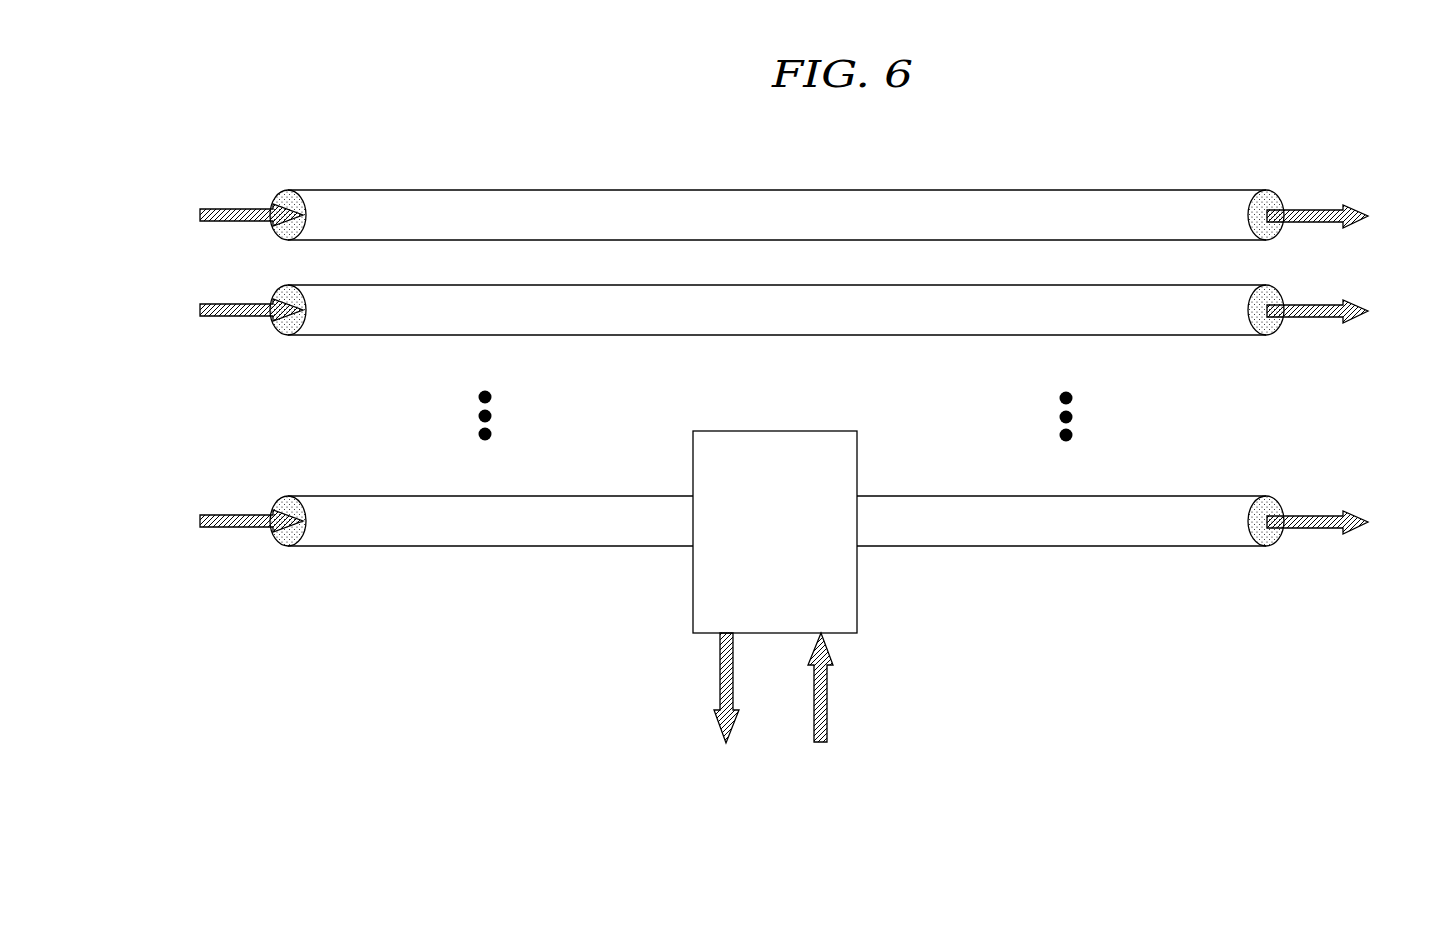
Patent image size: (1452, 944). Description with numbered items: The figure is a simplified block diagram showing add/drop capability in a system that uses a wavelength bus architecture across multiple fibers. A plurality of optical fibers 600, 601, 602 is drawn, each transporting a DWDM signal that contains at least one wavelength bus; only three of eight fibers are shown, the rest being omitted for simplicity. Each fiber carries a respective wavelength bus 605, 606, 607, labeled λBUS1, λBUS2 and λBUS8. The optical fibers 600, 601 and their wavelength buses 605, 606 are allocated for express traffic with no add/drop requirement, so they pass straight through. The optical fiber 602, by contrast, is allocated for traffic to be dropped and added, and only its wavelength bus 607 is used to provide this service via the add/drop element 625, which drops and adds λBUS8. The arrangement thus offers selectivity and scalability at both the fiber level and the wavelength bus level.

The optical fiber 600 is at (595, 192).
The optical fiber 601 is at (440, 335).
The optical fiber 602 is at (460, 546).
The wavelength bus 605 is at (253, 220).
The wavelength bus 606 is at (252, 316).
The wavelength bus 607 is at (253, 527).
The add/drop element 625 is at (777, 431).